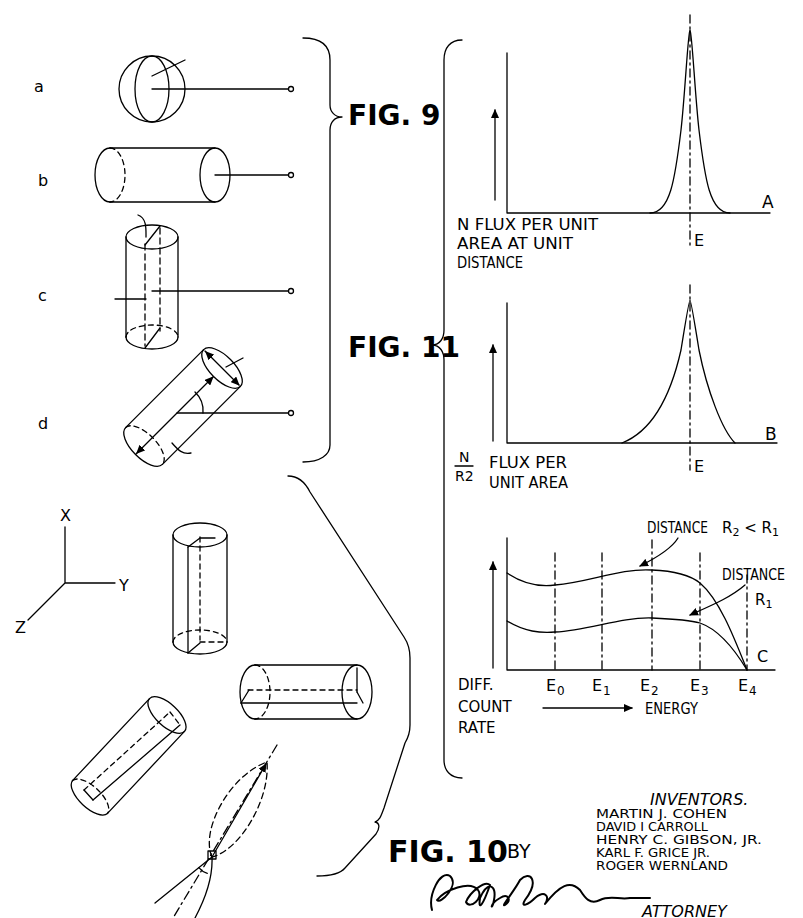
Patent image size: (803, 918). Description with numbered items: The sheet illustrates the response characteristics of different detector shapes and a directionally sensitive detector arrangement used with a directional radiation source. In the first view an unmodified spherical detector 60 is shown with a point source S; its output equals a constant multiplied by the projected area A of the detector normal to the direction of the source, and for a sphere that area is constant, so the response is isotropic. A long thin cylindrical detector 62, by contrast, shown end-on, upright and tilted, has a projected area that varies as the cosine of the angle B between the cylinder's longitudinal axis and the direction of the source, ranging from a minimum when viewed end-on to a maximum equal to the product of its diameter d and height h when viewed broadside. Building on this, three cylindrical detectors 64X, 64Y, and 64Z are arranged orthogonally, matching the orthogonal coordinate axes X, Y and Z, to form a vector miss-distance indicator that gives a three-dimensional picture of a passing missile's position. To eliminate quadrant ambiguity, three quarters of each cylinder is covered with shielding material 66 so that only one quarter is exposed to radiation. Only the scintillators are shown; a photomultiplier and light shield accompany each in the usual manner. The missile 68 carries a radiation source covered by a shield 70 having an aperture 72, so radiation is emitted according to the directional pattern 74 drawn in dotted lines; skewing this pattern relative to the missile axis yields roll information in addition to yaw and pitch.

In FIG. 9, the spherical detector 60 is at (114, 83).
In FIG. 9, the cylindrical detector 62 is at (141, 148).
In FIG. 10, the cylindrical detector 64X is at (230, 604).
In FIG. 10, the cylindrical detector 64Y is at (300, 661).
In FIG. 10, the cylindrical detector 64Z is at (119, 729).
In FIG. 10, the shielding material 66 is at (181, 612).
In FIG. 10, the missile 68 is at (195, 899).
In FIG. 10, the shield 70 is at (213, 866).
In FIG. 10, the aperture 72 is at (206, 856).
In FIG. 10, the directional pattern 74 is at (253, 806).